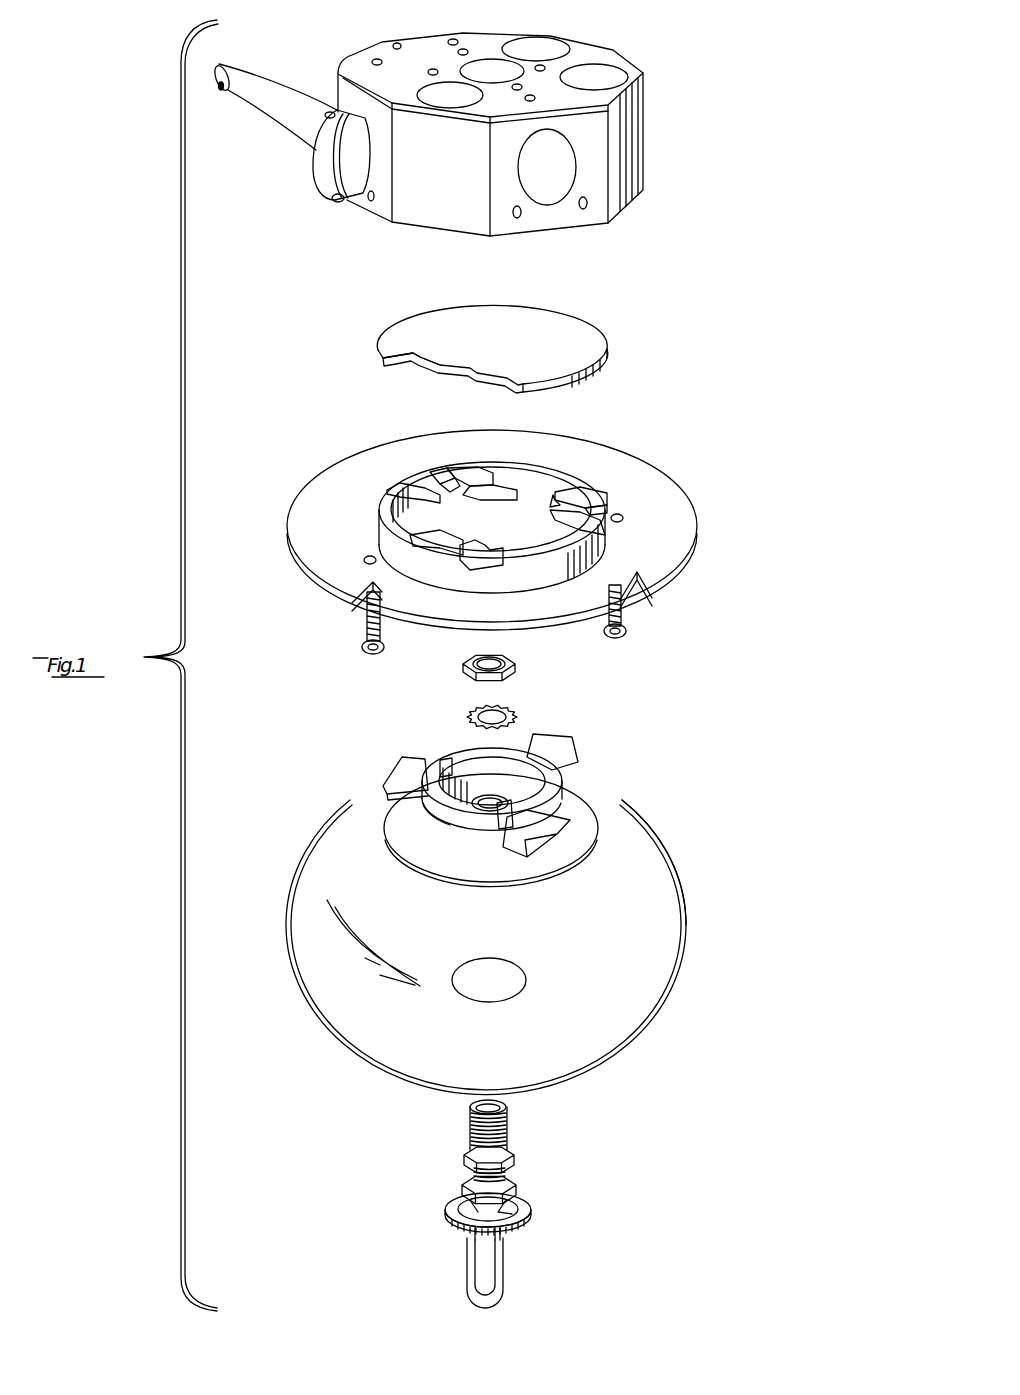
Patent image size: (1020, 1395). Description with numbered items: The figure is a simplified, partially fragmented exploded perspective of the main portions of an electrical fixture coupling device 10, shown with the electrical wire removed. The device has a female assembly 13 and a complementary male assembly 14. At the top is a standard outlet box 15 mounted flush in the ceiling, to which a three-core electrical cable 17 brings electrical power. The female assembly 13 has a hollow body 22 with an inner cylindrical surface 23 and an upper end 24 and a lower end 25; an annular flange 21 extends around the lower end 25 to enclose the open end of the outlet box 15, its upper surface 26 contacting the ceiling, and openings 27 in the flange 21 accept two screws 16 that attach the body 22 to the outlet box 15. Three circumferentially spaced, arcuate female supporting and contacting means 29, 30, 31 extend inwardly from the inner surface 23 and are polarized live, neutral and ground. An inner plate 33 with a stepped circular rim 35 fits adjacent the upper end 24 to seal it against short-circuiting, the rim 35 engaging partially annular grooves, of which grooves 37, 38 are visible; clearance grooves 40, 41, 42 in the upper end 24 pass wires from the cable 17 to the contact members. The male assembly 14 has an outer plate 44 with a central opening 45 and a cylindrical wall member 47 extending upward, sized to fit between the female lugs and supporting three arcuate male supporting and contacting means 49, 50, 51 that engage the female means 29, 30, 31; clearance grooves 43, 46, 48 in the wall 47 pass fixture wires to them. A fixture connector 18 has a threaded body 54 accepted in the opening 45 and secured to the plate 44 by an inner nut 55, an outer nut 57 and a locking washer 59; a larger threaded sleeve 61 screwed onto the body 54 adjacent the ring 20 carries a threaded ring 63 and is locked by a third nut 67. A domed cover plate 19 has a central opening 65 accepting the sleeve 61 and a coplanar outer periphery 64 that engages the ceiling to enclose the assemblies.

The electrical fixture coupling device 10 is at (654, 711).
The female assembly 13 is at (489, 531).
The male assembly 14 is at (501, 809).
The outlet box 15 is at (645, 167).
The screws 16 is at (362, 626).
The three-core electrical cable 17 is at (257, 95).
The fixture connector 18 is at (490, 1204).
The domed cover plate 19 is at (598, 1033).
The ring 20 is at (508, 1272).
The annular flange 21 is at (330, 480).
The hollow body 22 is at (568, 474).
The inner cylindrical surface 23 is at (537, 477).
The upper end 24 is at (397, 488).
The lower end 25 is at (443, 583).
The upper surface 26 is at (533, 616).
The opening 27 is at (365, 561).
The female supporting and contacting means 29 is at (478, 467).
The female supporting and contacting means 30 is at (430, 540).
The female supporting and contacting means 31 is at (597, 540).
The inner plate 33 is at (553, 325).
The stepped circular rim 35 is at (407, 367).
The groove 37 is at (445, 492).
The groove 38 is at (553, 498).
The clearance groove 40 is at (437, 478).
The clearance groove 41 is at (475, 572).
The clearance groove 42 is at (607, 503).
The clearance groove 43 is at (543, 770).
The outer plate 44 is at (433, 868).
The central opening 45 is at (483, 803).
The clearance groove 46 is at (445, 763).
The cylindrical wall member 47 is at (453, 823).
The clearance groove 48 is at (503, 832).
The male supporting and contacting means 49 is at (547, 743).
The male supporting and contacting means 50 is at (392, 768).
The male supporting and contacting means 51 is at (562, 827).
The threaded body 54 is at (507, 1138).
The inner nut 55 is at (517, 670).
The outer nut 57 is at (467, 1160).
The locking washer 59 is at (473, 712).
The threaded sleeve 61 is at (458, 1218).
The threaded ring 63 is at (528, 1207).
The outer periphery 64 is at (687, 827).
The central opening 65 is at (470, 985).
The third nut 67 is at (463, 1178).